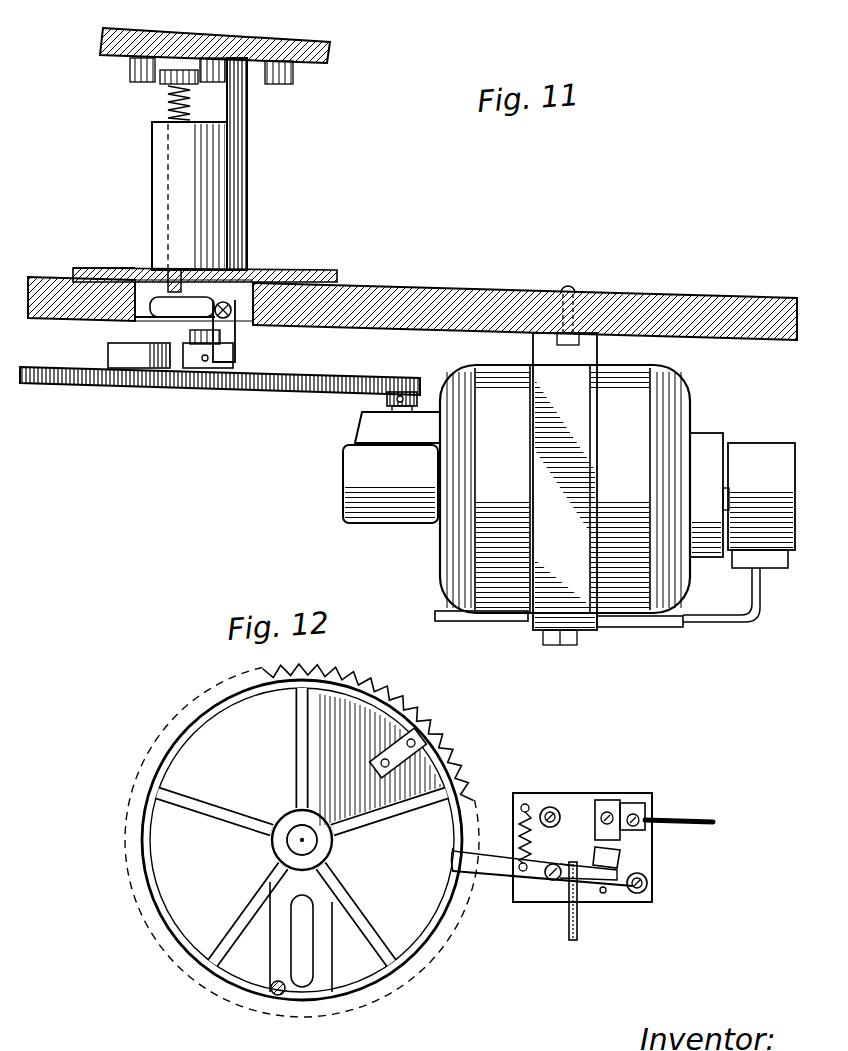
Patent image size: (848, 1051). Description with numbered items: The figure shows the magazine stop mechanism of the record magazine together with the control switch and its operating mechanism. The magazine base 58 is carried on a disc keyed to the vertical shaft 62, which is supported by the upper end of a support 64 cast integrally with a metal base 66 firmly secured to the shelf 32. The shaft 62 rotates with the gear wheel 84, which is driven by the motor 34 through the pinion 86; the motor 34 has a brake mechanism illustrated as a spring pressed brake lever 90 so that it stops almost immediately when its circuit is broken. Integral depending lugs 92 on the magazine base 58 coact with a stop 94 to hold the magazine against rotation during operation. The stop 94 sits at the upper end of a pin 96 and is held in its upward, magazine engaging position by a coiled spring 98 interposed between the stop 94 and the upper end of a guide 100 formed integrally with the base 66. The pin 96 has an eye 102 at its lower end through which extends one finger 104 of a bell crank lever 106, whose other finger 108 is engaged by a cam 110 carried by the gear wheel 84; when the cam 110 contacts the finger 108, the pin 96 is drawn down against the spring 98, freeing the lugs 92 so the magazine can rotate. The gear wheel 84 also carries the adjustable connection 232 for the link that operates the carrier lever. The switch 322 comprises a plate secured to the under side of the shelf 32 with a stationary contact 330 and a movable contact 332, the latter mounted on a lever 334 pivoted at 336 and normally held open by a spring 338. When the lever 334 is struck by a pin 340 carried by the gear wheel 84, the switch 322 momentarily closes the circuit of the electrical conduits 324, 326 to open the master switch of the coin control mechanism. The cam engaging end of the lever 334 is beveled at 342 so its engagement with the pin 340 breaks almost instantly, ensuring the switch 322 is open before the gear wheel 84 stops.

In FIG. 11, the magazine base 58 is at (330, 44).
In FIG. 11, the depending lugs 92 is at (130, 68).
In FIG. 11, the stop 94 is at (160, 80).
In FIG. 11, the coiled spring 98 is at (190, 110).
In FIG. 11, the support 64 is at (247, 163).
In FIG. 11, the guide 100 is at (152, 175).
In FIG. 11, the metal base 66 is at (330, 272).
In FIG. 11, the eye 102 is at (100, 268).
In FIG. 11, the shelf 32 is at (775, 300).
In FIG. 11, the pin 96 is at (168, 280).
In FIG. 11, the finger 104 is at (150, 307).
In FIG. 11, the bell crank lever 106 is at (233, 318).
In FIG. 11, the finger 108 is at (235, 345).
In FIG. 11, the gear wheel 84 is at (305, 385).
In FIG. 12, the gear wheel 84 is at (372, 690).
In FIG. 11, the cam 110 is at (118, 370).
In FIG. 12, the cam 110 is at (438, 738).
In FIG. 11, the vertical shaft 62 is at (198, 368).
In FIG. 11, the pinion 86 is at (405, 380).
In FIG. 11, the motor 34 is at (343, 495).
In FIG. 11, the brake lever 90 is at (755, 630).
In FIG. 12, the beveled end 342 is at (455, 851).
In FIG. 12, the lever 334 is at (468, 860).
In FIG. 12, the switch 322 is at (578, 790).
In FIG. 12, the electrical conduit 324 is at (552, 806).
In FIG. 12, the spring 338 is at (521, 812).
In FIG. 12, the stationary contact 330 is at (612, 806).
In FIG. 12, the electrical conduit 326 is at (690, 820).
In FIG. 12, the movable contact 332 is at (620, 862).
In FIG. 12, the pivot 336 is at (551, 880).
In FIG. 12, the pin 340 is at (274, 994).
In FIG. 12, the adjustable connection 232 is at (308, 985).